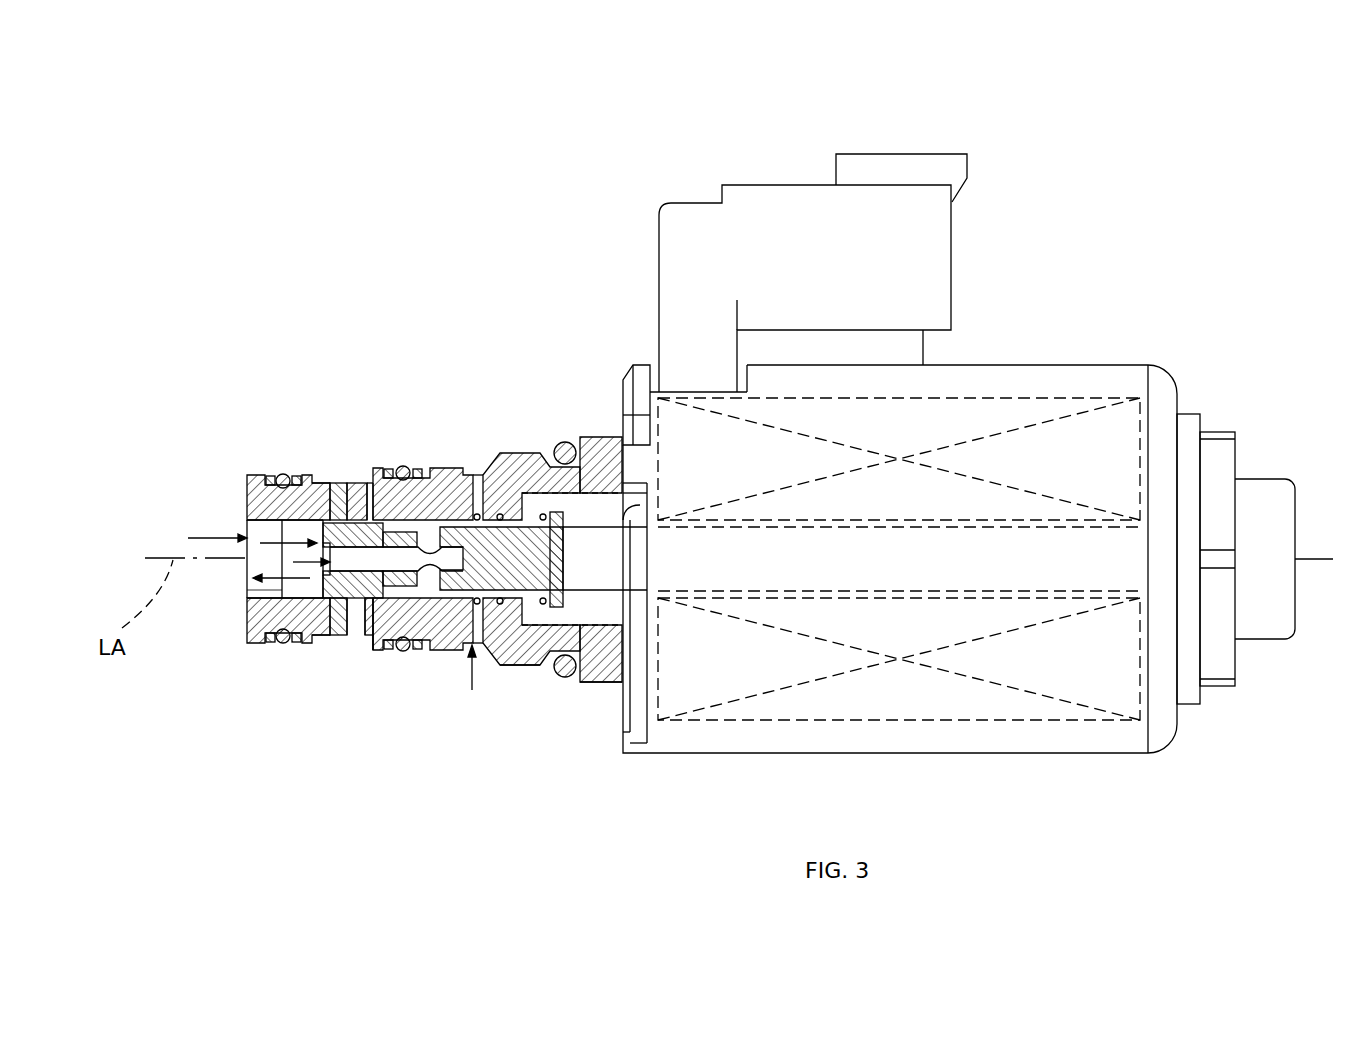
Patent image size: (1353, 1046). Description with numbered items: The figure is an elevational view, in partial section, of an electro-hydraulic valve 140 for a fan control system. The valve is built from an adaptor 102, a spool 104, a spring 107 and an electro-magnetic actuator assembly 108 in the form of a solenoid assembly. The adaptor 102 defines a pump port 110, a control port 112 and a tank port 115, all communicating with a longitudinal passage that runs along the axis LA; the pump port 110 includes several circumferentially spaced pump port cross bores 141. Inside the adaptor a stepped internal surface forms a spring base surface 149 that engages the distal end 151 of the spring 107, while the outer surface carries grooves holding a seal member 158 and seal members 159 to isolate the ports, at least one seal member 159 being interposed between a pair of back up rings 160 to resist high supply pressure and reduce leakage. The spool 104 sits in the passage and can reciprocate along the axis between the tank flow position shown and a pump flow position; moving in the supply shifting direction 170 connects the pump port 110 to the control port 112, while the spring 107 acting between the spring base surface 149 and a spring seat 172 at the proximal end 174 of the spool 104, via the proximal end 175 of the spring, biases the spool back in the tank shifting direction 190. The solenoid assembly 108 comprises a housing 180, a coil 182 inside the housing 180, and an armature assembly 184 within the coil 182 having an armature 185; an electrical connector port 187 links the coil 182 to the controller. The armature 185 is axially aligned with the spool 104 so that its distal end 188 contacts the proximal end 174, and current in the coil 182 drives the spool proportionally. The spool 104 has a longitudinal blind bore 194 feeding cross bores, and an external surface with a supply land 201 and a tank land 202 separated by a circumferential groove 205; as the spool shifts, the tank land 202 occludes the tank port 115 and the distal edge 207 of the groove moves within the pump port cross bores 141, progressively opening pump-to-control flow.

The adaptor 102 is at (282, 473).
The spool 104 is at (320, 478).
The spring 107 is at (500, 512).
The electro-magnetic actuator assembly 108 is at (634, 324).
The pump port 110 is at (353, 650).
The control port 112 is at (196, 540).
The tank port 115 is at (478, 685).
The electro-hydraulic valve 140 is at (311, 320).
The pump port cross bores 141 is at (322, 478).
The spring base surface 149 is at (470, 475).
The distal end 151 is at (520, 665).
The seal member 158 is at (562, 443).
The seal member 159 is at (280, 473).
The back up rings 160 is at (465, 745).
The supply shifting direction 170 is at (250, 590).
The spring seat 172 is at (520, 453).
The proximal end 174 is at (588, 437).
The proximal end 175 is at (553, 674).
The housing 180 is at (995, 365).
The coil 182 is at (1100, 440).
The armature assembly 184 is at (1023, 560).
The armature 185 is at (597, 682).
The electrical connector port 187 is at (900, 154).
The distal end 188 is at (600, 556).
The tank shifting direction 190 is at (268, 543).
The longitudinal blind bore 194 is at (290, 562).
The supply land 201 is at (352, 482).
The tank land 202 is at (473, 513).
The circumferential groove 205 is at (357, 482).
The distal edge 207 is at (375, 645).